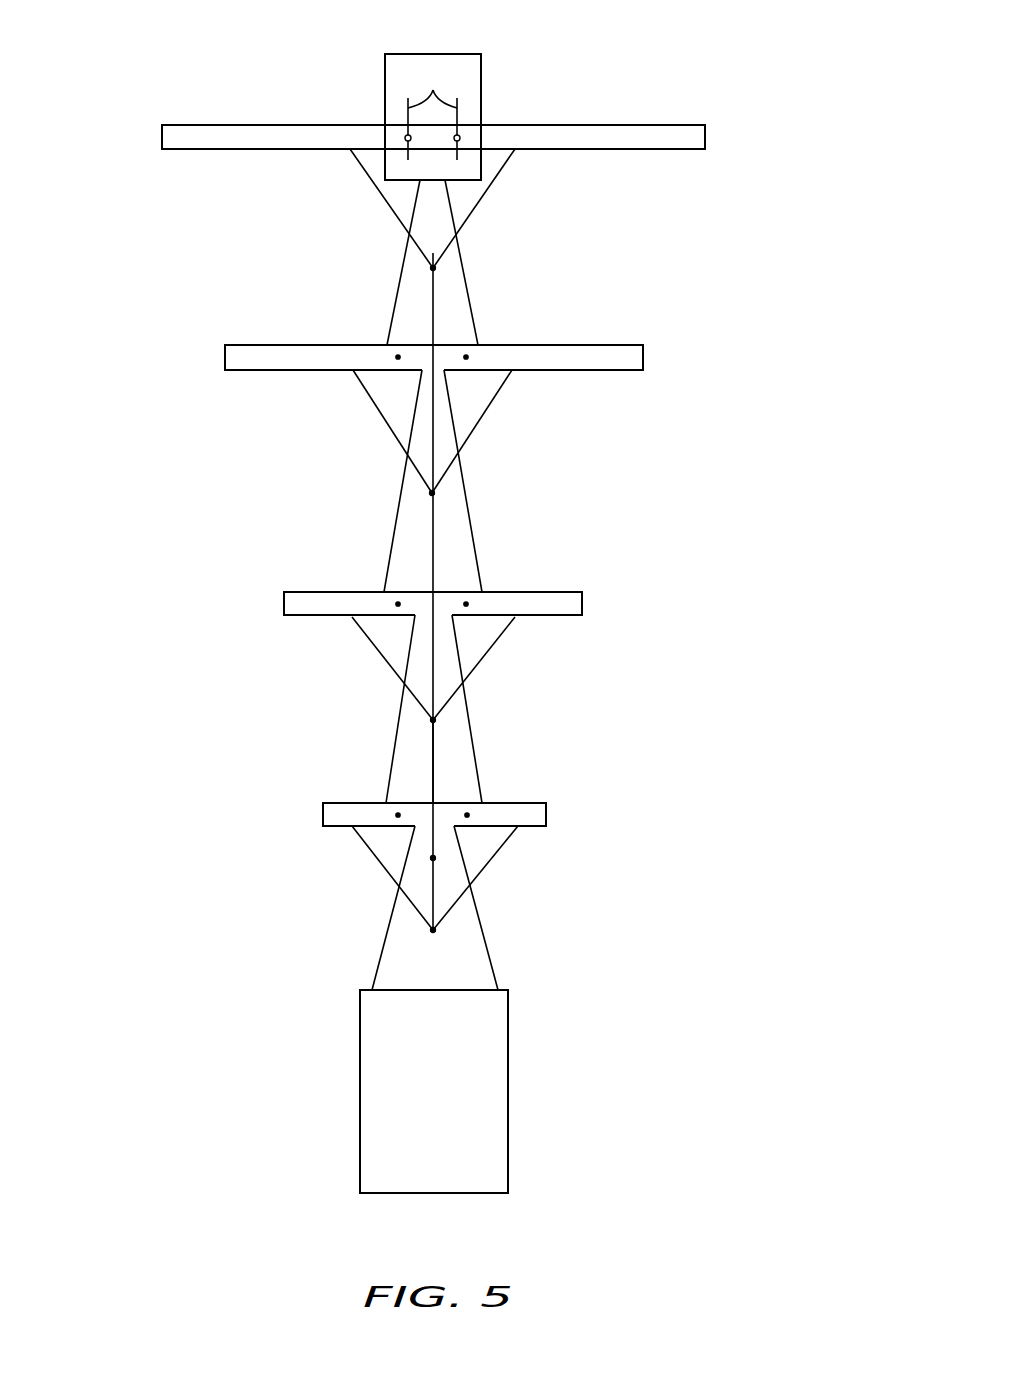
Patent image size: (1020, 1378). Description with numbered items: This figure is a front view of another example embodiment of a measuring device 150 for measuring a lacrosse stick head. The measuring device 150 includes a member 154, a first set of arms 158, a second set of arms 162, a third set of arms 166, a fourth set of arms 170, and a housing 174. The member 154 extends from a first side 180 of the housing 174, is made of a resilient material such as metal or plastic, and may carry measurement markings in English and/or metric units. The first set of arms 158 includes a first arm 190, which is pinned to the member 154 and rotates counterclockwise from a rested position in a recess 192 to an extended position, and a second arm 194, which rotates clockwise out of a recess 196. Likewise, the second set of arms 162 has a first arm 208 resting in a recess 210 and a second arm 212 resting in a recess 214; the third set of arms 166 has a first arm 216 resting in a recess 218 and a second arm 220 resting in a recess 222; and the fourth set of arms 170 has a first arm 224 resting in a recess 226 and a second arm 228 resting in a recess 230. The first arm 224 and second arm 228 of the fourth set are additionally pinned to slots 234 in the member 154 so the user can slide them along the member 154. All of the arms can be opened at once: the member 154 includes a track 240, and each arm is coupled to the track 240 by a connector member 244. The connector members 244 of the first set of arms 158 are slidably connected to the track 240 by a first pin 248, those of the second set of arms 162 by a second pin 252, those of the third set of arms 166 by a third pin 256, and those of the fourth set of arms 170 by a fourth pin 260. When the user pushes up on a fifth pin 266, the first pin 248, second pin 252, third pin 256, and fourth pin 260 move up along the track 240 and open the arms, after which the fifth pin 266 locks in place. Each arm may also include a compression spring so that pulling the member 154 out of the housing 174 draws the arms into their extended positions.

The measuring device 150 is at (708, 1098).
The member 154 is at (478, 968).
The first set of arms 158 is at (537, 800).
The second set of arms 162 is at (570, 605).
The third set of arms 166 is at (633, 352).
The fourth set of arms 170 is at (688, 137).
The housing 174 is at (493, 1135).
The first side 180 is at (365, 983).
The first arm 190 is at (522, 822).
The recess 192 is at (482, 893).
The second arm 194 is at (335, 802).
The recess 196 is at (363, 850).
The first arm 208 is at (548, 604).
The recess 210 is at (500, 680).
The second arm 212 is at (307, 602).
The recess 214 is at (353, 657).
The first arm 216 is at (605, 360).
The recess 218 is at (513, 402).
The second arm 220 is at (230, 357).
The recess 222 is at (360, 432).
The first arm 224 is at (607, 138).
The recess 226 is at (497, 230).
The second arm 228 is at (193, 140).
The recess 230 is at (382, 223).
The slots 234 is at (433, 90).
The track 240 is at (433, 750).
The connector member 244 is at (363, 390).
The first pin 248 is at (433, 930).
The second pin 252 is at (433, 720).
The third pin 256 is at (433, 493).
The fourth pin 260 is at (433, 268).
The fifth pin 266 is at (433, 858).